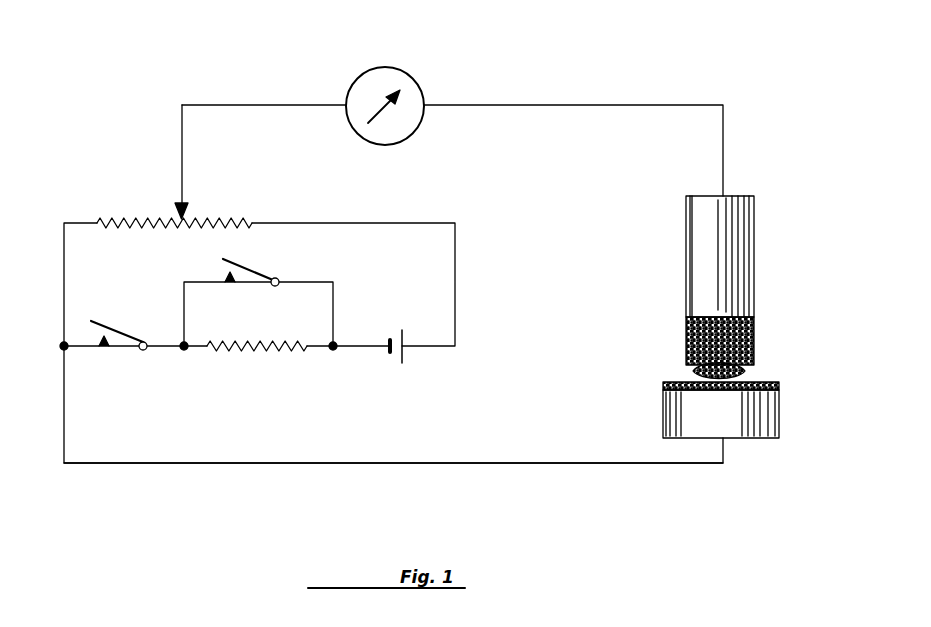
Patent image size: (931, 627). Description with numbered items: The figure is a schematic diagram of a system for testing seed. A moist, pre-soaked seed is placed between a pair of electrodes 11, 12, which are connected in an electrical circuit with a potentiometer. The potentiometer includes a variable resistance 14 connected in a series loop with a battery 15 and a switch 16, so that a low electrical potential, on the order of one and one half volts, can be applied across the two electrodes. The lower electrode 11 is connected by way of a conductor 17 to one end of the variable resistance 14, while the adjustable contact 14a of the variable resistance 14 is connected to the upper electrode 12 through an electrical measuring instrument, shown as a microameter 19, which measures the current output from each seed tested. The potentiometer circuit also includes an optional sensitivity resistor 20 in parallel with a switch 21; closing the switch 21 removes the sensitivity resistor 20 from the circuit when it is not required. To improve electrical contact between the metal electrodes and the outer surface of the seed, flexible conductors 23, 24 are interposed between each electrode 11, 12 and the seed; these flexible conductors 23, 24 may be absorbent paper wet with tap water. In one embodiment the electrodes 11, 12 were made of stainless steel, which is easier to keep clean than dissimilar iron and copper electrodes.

The electrode 11 is at (688, 415).
The electrode 12 is at (705, 252).
The variable resistance 14 is at (131, 218).
The adjustable contact 14a is at (178, 202).
The battery 15 is at (405, 362).
The switch 16 is at (118, 330).
The conductor 17 is at (307, 465).
The microameter 19 is at (373, 79).
The sensitivity resistor 20 is at (255, 350).
The switch 21 is at (250, 268).
The flexible conductor 23 is at (752, 345).
The flexible conductor 24 is at (781, 383).